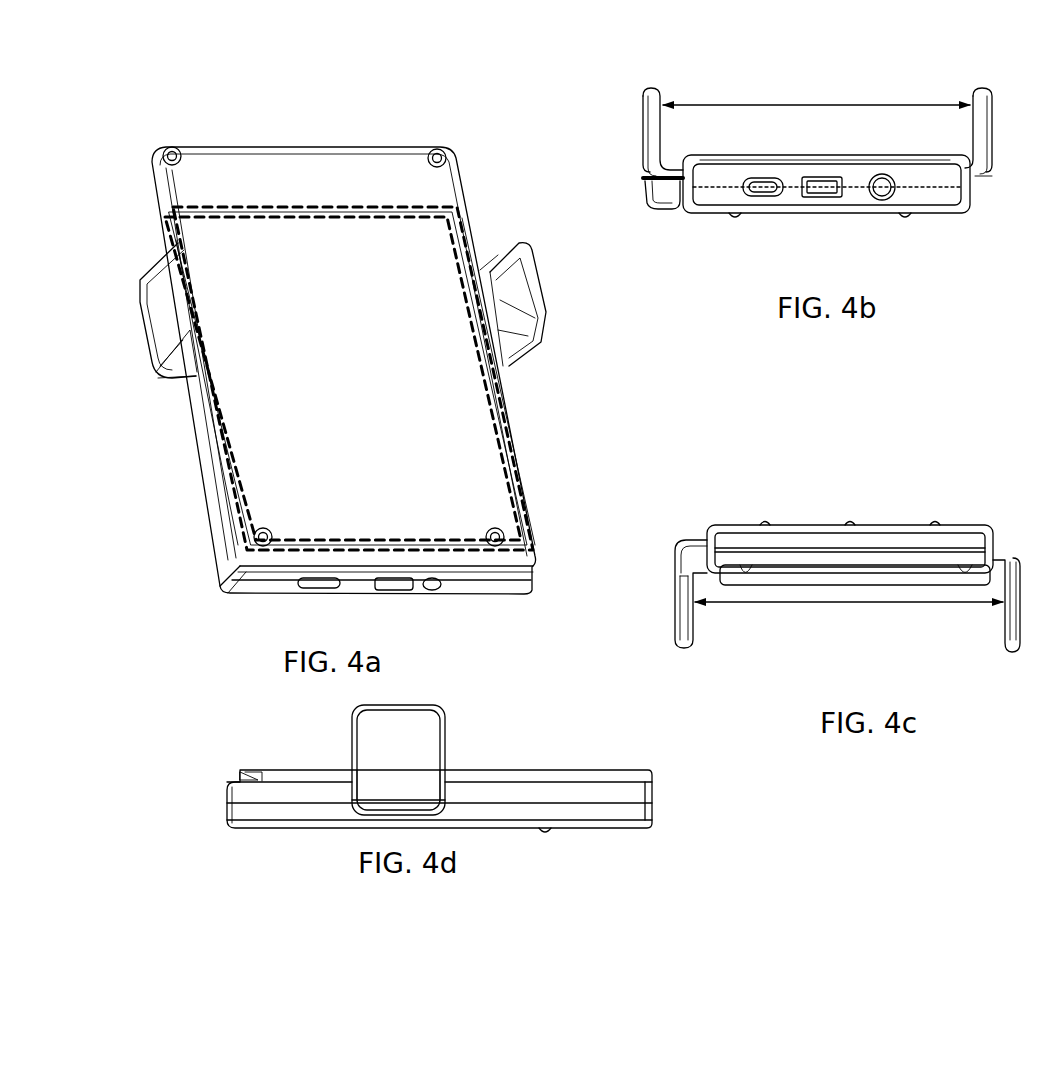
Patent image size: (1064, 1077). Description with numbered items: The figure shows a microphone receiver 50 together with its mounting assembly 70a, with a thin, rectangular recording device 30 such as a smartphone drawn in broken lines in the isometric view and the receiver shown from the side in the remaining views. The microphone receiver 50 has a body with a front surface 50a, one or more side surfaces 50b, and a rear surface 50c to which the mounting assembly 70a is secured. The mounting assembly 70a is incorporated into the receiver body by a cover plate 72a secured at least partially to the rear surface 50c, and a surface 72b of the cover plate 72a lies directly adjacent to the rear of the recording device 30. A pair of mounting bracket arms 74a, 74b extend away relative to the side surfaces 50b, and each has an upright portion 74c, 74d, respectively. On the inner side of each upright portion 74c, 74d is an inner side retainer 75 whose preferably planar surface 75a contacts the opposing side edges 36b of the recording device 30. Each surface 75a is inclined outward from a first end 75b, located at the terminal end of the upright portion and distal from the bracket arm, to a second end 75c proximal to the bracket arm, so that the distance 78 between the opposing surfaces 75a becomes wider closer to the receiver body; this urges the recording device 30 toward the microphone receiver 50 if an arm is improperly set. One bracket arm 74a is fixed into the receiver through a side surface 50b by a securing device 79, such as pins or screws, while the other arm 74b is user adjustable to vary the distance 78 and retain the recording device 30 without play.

In FIG. 4a, the recording device 30 is at (321, 365).
In FIG. 4a, the side edges of recording device 36b is at (220, 437).
In FIG. 4a, the microphone receiver 50 is at (166, 556).
In FIG. 4b, the microphone receiver 50 is at (863, 226).
In FIG. 4c, the microphone receiver 50 is at (888, 510).
In FIG. 4d, the microphone receiver 50 is at (206, 803).
In FIG. 4c, the front surface 50a is at (813, 525).
In FIG. 4b, the side surfaces 50b is at (708, 180).
In FIG. 4c, the side surfaces 50b is at (742, 537).
In FIG. 4d, the side surfaces 50b is at (623, 797).
In FIG. 4d, the rear surface 50c is at (268, 777).
In FIG. 4a, the mounting assembly 70a is at (493, 237).
In FIG. 4b, the mounting assembly 70a is at (611, 131).
In FIG. 4c, the mounting assembly 70a is at (843, 655).
In FIG. 4d, the mounting assembly 70a is at (460, 718).
In FIG. 4a, the cover plate 72a is at (259, 197).
In FIG. 4d, the cover plate 72a is at (600, 770).
In FIG. 4a, the surface of cover plate 72b is at (346, 197).
In FIG. 4b, the surface of cover plate 72b is at (853, 152).
In FIG. 4d, the surface of cover plate 72b is at (480, 770).
In FIG. 4a, the mounting bracket arm 74a is at (150, 390).
In FIG. 4b, the mounting bracket arm 74a is at (648, 193).
In FIG. 4c, the mounting bracket arm 74a is at (675, 568).
In FIG. 4d, the mounting bracket arm 74a is at (363, 758).
In FIG. 4b, the mounting bracket arm 74b is at (985, 176).
In FIG. 4c, the mounting bracket arm 74b is at (1007, 573).
In FIG. 4a, the upright portion 74c is at (150, 313).
In FIG. 4b, the upright portion 74c is at (657, 97).
In FIG. 4c, the upright portion 74c is at (678, 628).
In FIG. 4d, the upright portion 74c is at (402, 718).
In FIG. 4a, the upright portion 74d is at (512, 310).
In FIG. 4b, the upright portion 74d is at (987, 98).
In FIG. 4c, the upright portion 74d is at (1013, 610).
In FIG. 4a, the inner side retainer 75 is at (198, 297).
In FIG. 4b, the inner side retainer 75 is at (962, 133).
In FIG. 4c, the inner side retainer 75 is at (972, 620).
In FIG. 4c, the surface of inner side retainer 75a is at (1003, 635).
In FIG. 4c, the first end 75b is at (1012, 652).
In FIG. 4c, the second end 75c is at (1003, 573).
In FIG. 4b, the distance 78 is at (710, 100).
In FIG. 4c, the distance 78 is at (731, 601).
In FIG. 4b, the securing device 79 is at (655, 178).